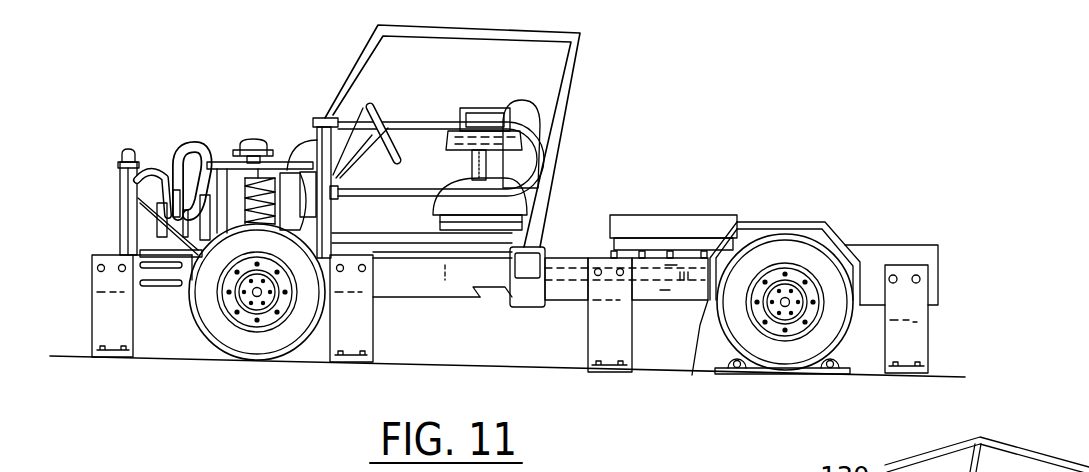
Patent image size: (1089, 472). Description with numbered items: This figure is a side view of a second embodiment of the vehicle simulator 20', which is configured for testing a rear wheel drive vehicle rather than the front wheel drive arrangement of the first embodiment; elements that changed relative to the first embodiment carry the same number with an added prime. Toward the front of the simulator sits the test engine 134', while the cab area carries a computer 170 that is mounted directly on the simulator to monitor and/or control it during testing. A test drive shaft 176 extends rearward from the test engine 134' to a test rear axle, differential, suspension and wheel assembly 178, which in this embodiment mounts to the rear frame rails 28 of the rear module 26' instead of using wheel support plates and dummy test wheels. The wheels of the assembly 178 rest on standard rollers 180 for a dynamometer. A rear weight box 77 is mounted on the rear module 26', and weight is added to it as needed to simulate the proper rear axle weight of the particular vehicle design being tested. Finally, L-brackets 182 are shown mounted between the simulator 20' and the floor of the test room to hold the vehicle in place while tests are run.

The vehicle simulator 20' is at (436, 140).
The rear module 26' is at (836, 245).
The rear frame rails 28 is at (667, 305).
The rear weight box 77 is at (677, 215).
The test engine 134' is at (214, 139).
The computer 170 is at (480, 108).
The test drive shaft 176 is at (565, 258).
The test rear axle, differential, suspension and wheel assembly 178 is at (712, 370).
The rollers 180 is at (822, 376).
The L-brackets 182 is at (375, 343).